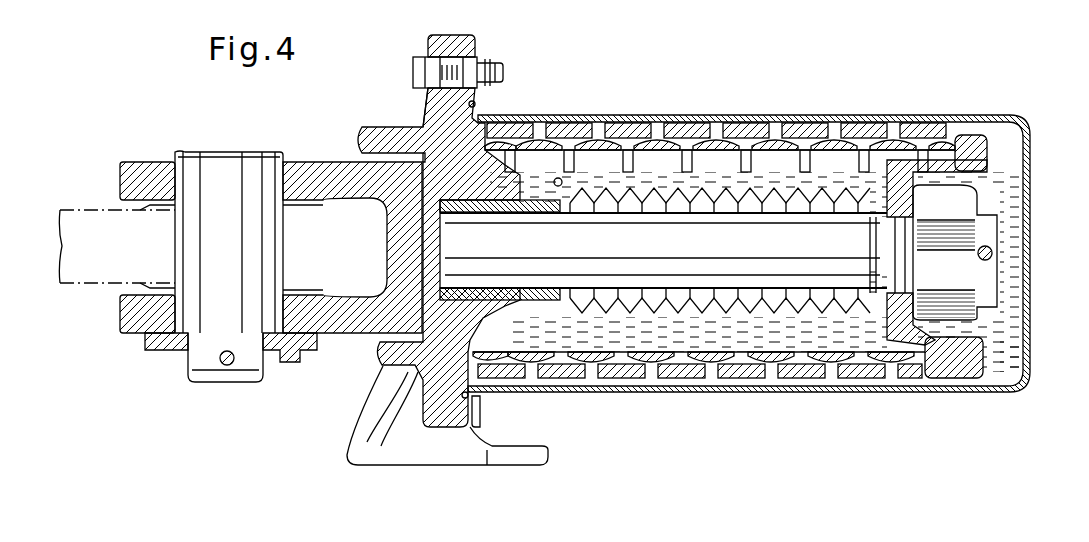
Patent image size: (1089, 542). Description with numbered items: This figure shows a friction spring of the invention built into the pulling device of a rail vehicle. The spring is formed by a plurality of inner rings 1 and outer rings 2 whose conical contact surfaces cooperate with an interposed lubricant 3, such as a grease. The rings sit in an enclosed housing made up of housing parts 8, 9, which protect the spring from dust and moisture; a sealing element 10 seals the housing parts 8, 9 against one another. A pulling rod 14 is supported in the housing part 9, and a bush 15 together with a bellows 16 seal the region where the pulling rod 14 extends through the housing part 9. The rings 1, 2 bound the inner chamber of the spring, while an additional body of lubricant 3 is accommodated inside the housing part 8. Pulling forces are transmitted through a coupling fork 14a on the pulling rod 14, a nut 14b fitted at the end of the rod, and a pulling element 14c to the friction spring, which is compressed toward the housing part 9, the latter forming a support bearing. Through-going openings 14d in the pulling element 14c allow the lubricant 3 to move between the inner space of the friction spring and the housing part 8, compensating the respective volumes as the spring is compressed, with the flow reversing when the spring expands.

The inner rings 1 is at (650, 360).
The outer rings 2 is at (683, 372).
The lubricant 3 is at (772, 330).
The housing part 8 is at (867, 114).
The housing part 9 is at (442, 128).
The sealing element 10 is at (478, 103).
The pulling rod 14 is at (765, 240).
The coupling fork 14a is at (133, 318).
The nut 14b is at (958, 205).
The pulling element 14c is at (975, 150).
The through-going openings 14d is at (915, 348).
The bush 15 is at (535, 200).
The bellows 16 is at (632, 190).